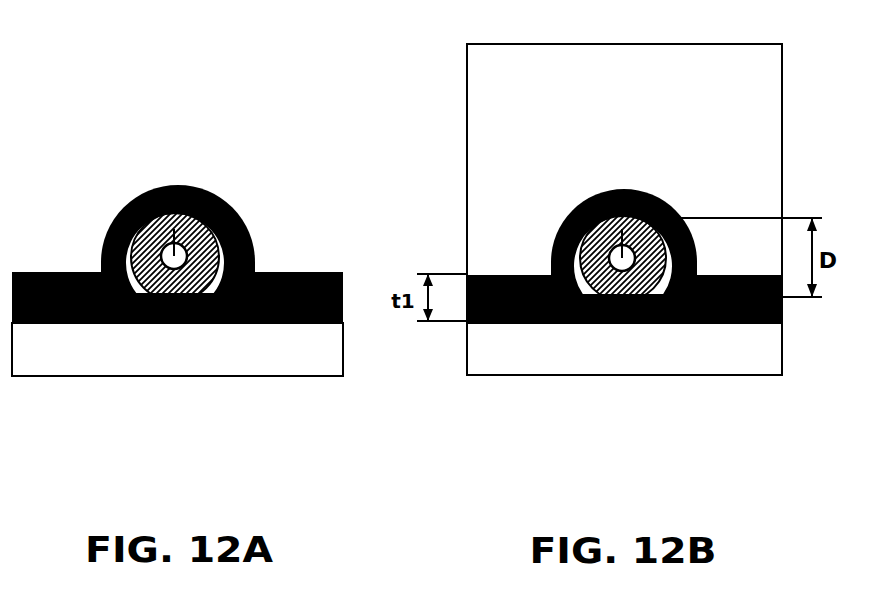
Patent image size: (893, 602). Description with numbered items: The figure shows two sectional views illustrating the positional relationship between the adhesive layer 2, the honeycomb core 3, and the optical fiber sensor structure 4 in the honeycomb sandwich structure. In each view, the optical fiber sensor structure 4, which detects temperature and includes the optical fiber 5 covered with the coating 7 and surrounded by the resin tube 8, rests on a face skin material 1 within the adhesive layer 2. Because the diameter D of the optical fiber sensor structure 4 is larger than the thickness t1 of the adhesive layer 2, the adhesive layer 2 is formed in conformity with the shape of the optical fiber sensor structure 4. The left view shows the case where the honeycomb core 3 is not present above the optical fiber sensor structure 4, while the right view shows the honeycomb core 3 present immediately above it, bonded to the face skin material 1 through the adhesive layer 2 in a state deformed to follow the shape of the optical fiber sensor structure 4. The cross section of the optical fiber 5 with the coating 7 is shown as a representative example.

In FIG. 12A, the face skin material 1 is at (173, 365).
In FIG. 12B, the face skin material 1 is at (623, 365).
In FIG. 12A, the adhesive layer 2 is at (49, 273).
In FIG. 12B, the adhesive layer 2 is at (498, 275).
In FIG. 12B, the honeycomb core 3 is at (477, 96).
In FIG. 12A, the optical fiber sensor structure 4 is at (152, 108).
In FIG. 12B, the optical fiber sensor structure 4 is at (600, 109).
In FIG. 12A, the optical fiber 5 is at (200, 183).
In FIG. 12B, the optical fiber 5 is at (645, 188).
In FIG. 12A, the coating 7 is at (222, 195).
In FIG. 12B, the coating 7 is at (662, 202).
In FIG. 12A, the resin tube 8 is at (147, 192).
In FIG. 12B, the resin tube 8 is at (590, 192).